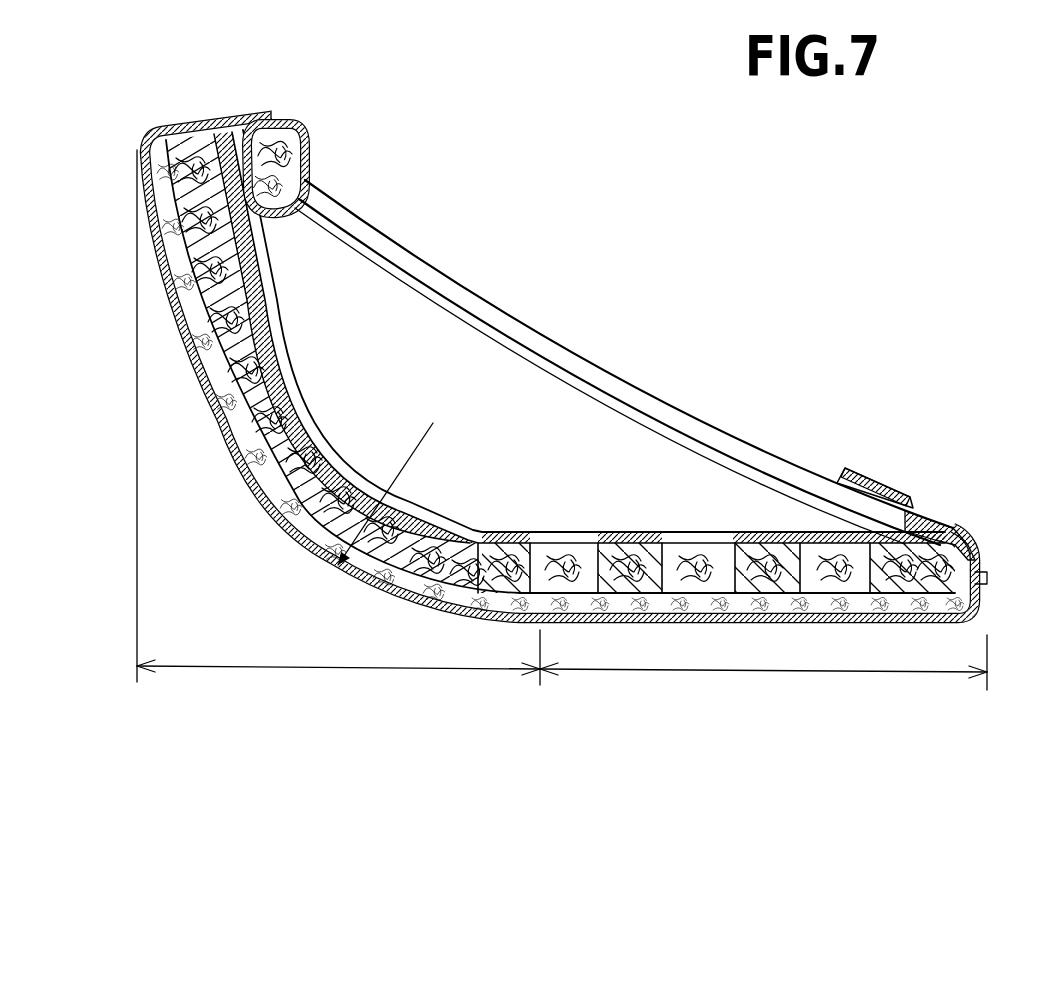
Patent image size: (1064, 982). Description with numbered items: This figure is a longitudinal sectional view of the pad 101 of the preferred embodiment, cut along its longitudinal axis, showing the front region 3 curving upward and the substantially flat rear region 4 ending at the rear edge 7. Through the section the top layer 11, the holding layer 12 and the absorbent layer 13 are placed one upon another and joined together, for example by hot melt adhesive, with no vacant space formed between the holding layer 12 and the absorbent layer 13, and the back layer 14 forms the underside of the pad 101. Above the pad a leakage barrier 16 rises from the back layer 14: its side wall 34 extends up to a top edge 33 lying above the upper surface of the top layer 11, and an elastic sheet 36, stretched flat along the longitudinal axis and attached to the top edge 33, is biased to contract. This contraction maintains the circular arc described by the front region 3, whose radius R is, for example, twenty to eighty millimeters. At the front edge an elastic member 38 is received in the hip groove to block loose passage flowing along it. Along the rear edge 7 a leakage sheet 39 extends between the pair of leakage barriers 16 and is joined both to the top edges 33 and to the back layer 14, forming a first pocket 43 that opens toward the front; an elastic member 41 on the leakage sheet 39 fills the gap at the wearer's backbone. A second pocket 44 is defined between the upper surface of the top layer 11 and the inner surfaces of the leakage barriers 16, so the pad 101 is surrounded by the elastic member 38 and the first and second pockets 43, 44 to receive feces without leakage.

The pad 101 is at (622, 225).
The elastic member 38 is at (300, 158).
The side wall 34 is at (387, 303).
The elastic sheet 36 is at (450, 285).
The top edge 33 is at (545, 340).
The leakage barrier 16 is at (619, 420).
The second pocket 44 is at (727, 485).
The first pocket 43 is at (830, 517).
The elastic member 41 is at (886, 487).
The leakage sheet 39 is at (914, 526).
The rear edge 7 is at (970, 555).
The back layer 14 is at (270, 507).
The holding layer 12 is at (250, 318).
The top layer 11 is at (284, 380).
The absorbent layer 13 is at (226, 412).
The radius of circular arc R is at (406, 463).
The front region 3 is at (308, 668).
The rear region 4 is at (745, 673).